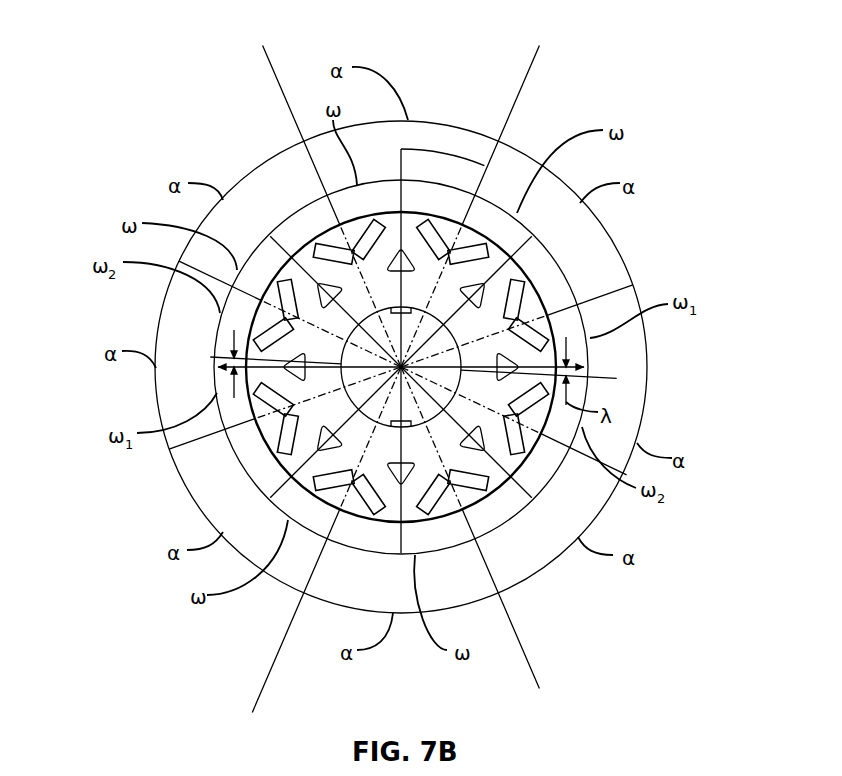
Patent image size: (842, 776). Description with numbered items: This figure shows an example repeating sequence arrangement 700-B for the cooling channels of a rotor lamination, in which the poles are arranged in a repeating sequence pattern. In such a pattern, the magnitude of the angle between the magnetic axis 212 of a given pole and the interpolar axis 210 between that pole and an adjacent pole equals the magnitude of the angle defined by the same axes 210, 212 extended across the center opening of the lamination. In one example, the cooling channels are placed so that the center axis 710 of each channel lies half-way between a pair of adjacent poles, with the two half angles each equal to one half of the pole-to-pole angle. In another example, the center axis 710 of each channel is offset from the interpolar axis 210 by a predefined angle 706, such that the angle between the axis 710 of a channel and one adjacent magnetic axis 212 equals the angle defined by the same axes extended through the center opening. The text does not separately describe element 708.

The repeating sequence arrangement 700-B is at (706, 92).
The stator segment 708 is at (452, 150).
The magnetic axis 212 is at (507, 122).
The interpolar axis 210 is at (240, 437).
The predefined angle λ 706 is at (234, 330).
The center axis 710 is at (209, 356).